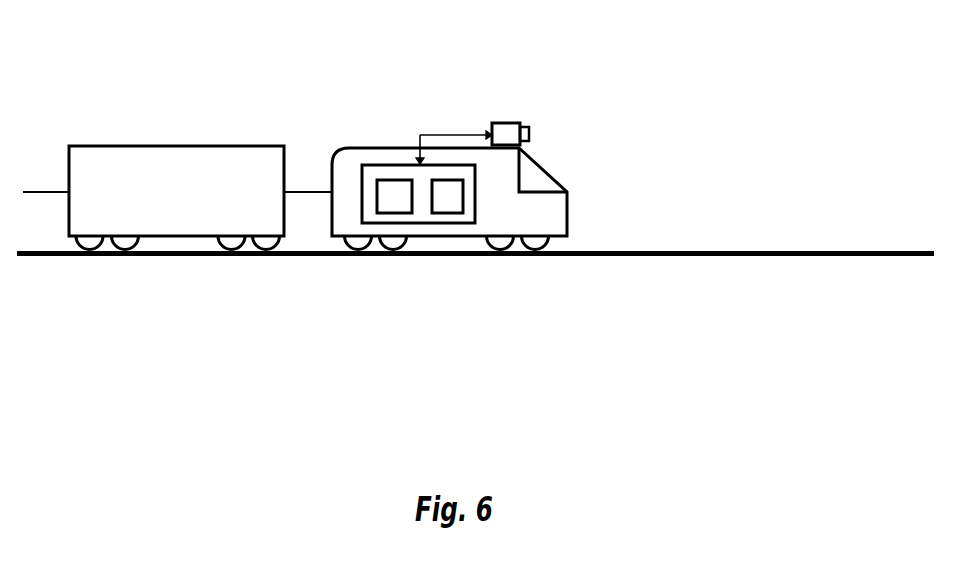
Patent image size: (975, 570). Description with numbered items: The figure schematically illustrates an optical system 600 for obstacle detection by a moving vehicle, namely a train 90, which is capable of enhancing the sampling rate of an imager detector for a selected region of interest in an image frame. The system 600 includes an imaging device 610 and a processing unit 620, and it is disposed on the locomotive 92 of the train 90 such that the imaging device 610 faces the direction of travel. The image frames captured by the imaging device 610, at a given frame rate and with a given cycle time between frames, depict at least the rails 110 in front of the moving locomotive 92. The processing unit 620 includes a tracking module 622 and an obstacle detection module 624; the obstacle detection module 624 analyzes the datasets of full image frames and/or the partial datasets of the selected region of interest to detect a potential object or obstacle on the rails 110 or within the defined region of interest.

The optical system 600 is at (545, 80).
The imaging device 610 is at (501, 122).
The processing unit 620 is at (375, 164).
The tracking module 622 is at (382, 180).
The obstacle detection module 624 is at (433, 180).
The train 90 is at (573, 283).
The locomotive 92 is at (448, 236).
The rails 110 is at (870, 251).